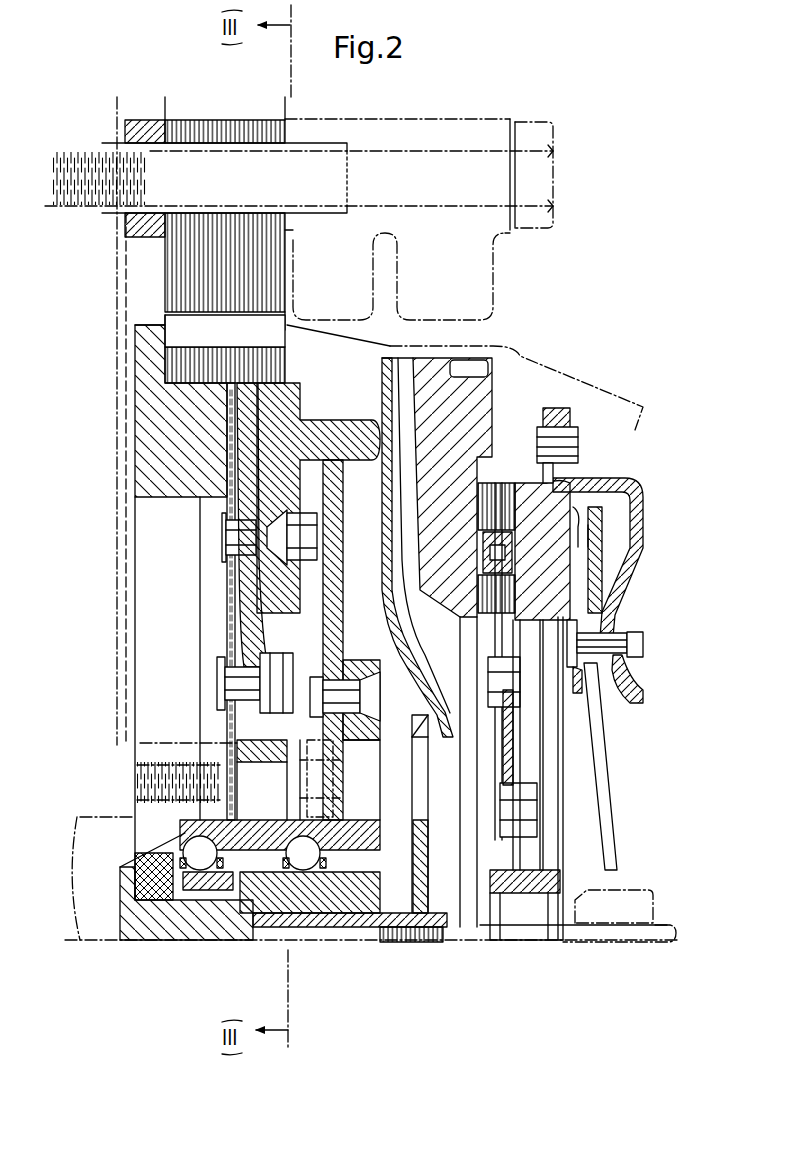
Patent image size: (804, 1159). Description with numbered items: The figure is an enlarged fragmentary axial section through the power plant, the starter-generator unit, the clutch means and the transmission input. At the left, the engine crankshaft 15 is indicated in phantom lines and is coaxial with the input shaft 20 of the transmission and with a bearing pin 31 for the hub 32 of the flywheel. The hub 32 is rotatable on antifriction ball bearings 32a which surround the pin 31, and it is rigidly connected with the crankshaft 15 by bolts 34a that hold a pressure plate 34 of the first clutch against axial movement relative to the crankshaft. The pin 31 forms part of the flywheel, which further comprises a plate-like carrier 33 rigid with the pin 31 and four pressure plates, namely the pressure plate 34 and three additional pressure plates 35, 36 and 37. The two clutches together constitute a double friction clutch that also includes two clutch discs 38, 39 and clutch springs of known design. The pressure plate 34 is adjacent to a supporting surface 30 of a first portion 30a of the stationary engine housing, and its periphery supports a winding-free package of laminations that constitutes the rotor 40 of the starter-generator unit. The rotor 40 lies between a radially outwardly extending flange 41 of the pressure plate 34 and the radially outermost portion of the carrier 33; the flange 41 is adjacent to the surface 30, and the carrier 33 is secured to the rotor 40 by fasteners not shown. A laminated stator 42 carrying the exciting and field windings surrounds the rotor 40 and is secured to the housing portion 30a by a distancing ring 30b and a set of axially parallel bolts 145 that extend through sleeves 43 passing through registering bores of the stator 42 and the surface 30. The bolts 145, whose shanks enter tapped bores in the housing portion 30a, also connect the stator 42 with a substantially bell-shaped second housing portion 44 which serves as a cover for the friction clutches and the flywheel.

The supporting surface 30 is at (122, 102).
The first housing portion 30a is at (102, 470).
The distancing ring 30b is at (140, 120).
The sleeves 43 is at (312, 147).
The bolts 145 is at (402, 163).
The laminated stator 42 is at (290, 290).
The rotor 40 is at (180, 340).
The flange 41 is at (137, 326).
The pressure plate 34 is at (187, 447).
The bolts 34a is at (333, 803).
The clutch disc 38 is at (214, 513).
The carrier 33 is at (337, 623).
The pressure plate 35 is at (330, 424).
The pressure plate 36 is at (427, 367).
The clutch disc 39 is at (495, 483).
The pressure plate 37 is at (610, 480).
The second housing portion 44 is at (538, 350).
The hub 32 is at (217, 822).
The antifriction ball bearings 32a is at (310, 865).
The bearing pin 31 is at (186, 927).
The crankshaft 15 is at (90, 830).
The input shaft 20 is at (635, 900).